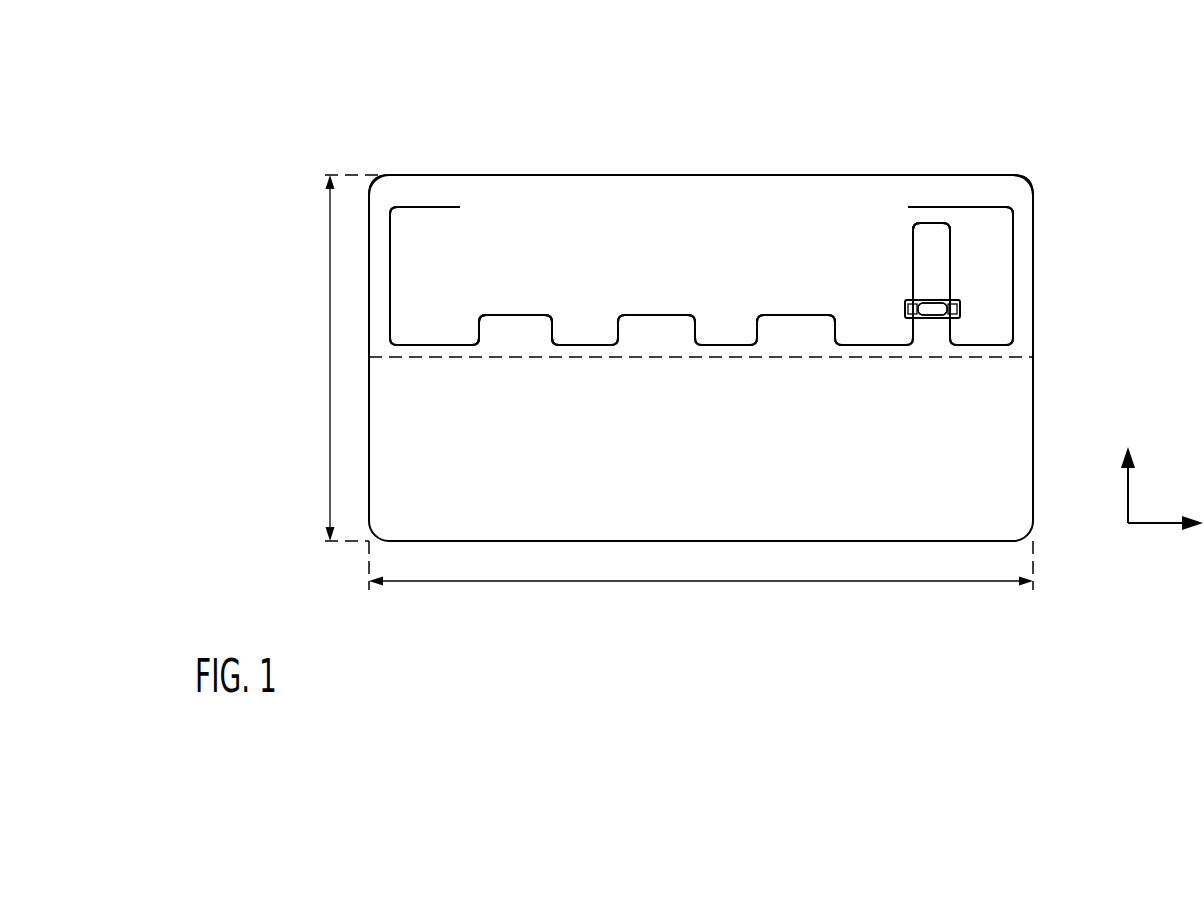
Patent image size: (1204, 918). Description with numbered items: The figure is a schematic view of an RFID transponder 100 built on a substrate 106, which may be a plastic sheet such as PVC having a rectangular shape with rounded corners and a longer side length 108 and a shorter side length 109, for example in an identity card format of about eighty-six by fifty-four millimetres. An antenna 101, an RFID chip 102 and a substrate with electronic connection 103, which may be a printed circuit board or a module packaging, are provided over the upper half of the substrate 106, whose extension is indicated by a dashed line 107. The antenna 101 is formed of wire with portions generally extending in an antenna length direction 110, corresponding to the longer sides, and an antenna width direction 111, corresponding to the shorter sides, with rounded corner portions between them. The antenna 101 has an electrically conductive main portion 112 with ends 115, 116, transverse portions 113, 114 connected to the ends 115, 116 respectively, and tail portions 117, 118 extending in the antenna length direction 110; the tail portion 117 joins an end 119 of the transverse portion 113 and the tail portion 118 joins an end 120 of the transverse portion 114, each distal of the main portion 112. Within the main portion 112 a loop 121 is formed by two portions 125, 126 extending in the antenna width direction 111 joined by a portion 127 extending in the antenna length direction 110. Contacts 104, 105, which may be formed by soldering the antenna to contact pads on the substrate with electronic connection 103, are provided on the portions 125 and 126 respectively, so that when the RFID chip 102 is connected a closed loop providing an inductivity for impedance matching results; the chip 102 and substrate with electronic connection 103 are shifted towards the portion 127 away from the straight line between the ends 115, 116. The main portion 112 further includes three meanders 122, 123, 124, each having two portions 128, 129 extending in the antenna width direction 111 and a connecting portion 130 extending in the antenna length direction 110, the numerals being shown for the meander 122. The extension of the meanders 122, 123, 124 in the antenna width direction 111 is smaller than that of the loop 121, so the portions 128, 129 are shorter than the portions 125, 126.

The RFID transponder 100 is at (305, 102).
The antenna 101 is at (620, 275).
The RFID chip 102 is at (930, 320).
The substrate with electronic connection 103 is at (904, 300).
The contact 104 is at (904, 313).
The contact 105 is at (958, 308).
The substrate 106 is at (1028, 180).
The dashed line 107 is at (1007, 350).
The longer side length 108 is at (700, 581).
The shorter side length 109 is at (330, 342).
The antenna length direction 110 is at (1155, 523).
The antenna width direction 111 is at (1128, 488).
The main portion 112 is at (428, 345).
The transverse portion 113 is at (1013, 273).
The transverse portion 114 is at (390, 256).
The end 115 is at (1010, 347).
The end 116 is at (382, 348).
The tail portion 117 is at (955, 207).
The tail portion 118 is at (422, 207).
The end 119 is at (1012, 218).
The end 120 is at (392, 205).
The loop 121 is at (910, 238).
The meander 122 is at (500, 313).
The meander 123 is at (658, 313).
The meander 124 is at (782, 313).
The portion 125 is at (912, 260).
The portion 126 is at (951, 248).
The portion 127 is at (917, 227).
The portion 128 is at (484, 337).
The portion 129 is at (547, 337).
The connecting portion 130 is at (532, 313).